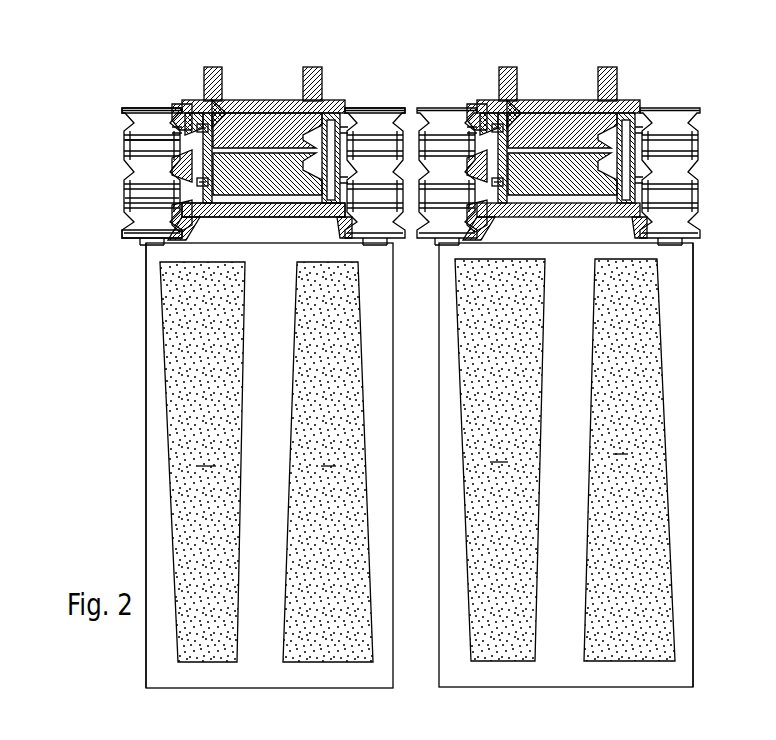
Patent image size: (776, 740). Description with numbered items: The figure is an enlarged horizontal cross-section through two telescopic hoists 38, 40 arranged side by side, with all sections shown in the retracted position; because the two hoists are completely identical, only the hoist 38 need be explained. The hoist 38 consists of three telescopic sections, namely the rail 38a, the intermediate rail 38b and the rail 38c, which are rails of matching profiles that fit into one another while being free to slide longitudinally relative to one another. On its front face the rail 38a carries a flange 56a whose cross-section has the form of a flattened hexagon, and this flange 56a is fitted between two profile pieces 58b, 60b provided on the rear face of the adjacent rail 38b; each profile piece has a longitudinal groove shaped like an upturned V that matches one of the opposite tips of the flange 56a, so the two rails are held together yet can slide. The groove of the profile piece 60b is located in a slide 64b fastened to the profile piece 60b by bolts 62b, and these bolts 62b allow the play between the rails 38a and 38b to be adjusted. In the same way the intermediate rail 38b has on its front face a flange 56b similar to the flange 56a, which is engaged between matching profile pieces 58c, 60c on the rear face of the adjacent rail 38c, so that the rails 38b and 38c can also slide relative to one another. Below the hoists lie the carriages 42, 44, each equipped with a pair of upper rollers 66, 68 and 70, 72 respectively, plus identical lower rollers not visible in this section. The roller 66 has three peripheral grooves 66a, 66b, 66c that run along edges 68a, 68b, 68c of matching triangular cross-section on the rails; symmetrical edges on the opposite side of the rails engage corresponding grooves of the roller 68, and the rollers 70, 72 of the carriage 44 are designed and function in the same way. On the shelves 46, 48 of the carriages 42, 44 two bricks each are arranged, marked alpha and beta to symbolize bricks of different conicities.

The hoist 38 is at (266, 70).
The rail 38a is at (244, 112).
The intermediate rail 38b is at (124, 149).
The rail 38c is at (301, 224).
The hoist 40 is at (569, 80).
The carriage 42 is at (141, 381).
The carriage 44 is at (700, 308).
The shelf 46 is at (146, 496).
The shelf 48 is at (682, 464).
The flange 56a is at (278, 128).
The flange 56b is at (251, 224).
The profile piece 58b is at (318, 104).
The profile piece 58c is at (358, 110).
The profile piece 60b is at (200, 124).
The profile piece 60c is at (202, 224).
The bolts 62b is at (192, 115).
The slide 64b is at (212, 104).
The upper roller 66 is at (140, 247).
The peripheral groove 66a is at (124, 112).
The peripheral groove 66b is at (170, 196).
The peripheral groove 66c is at (128, 238).
The upper roller 68 is at (403, 108).
The edge 68a is at (178, 108).
The edge 68b is at (174, 176).
The edge 68c is at (176, 208).
The upper roller 70 is at (452, 108).
The upper roller 72 is at (683, 108).